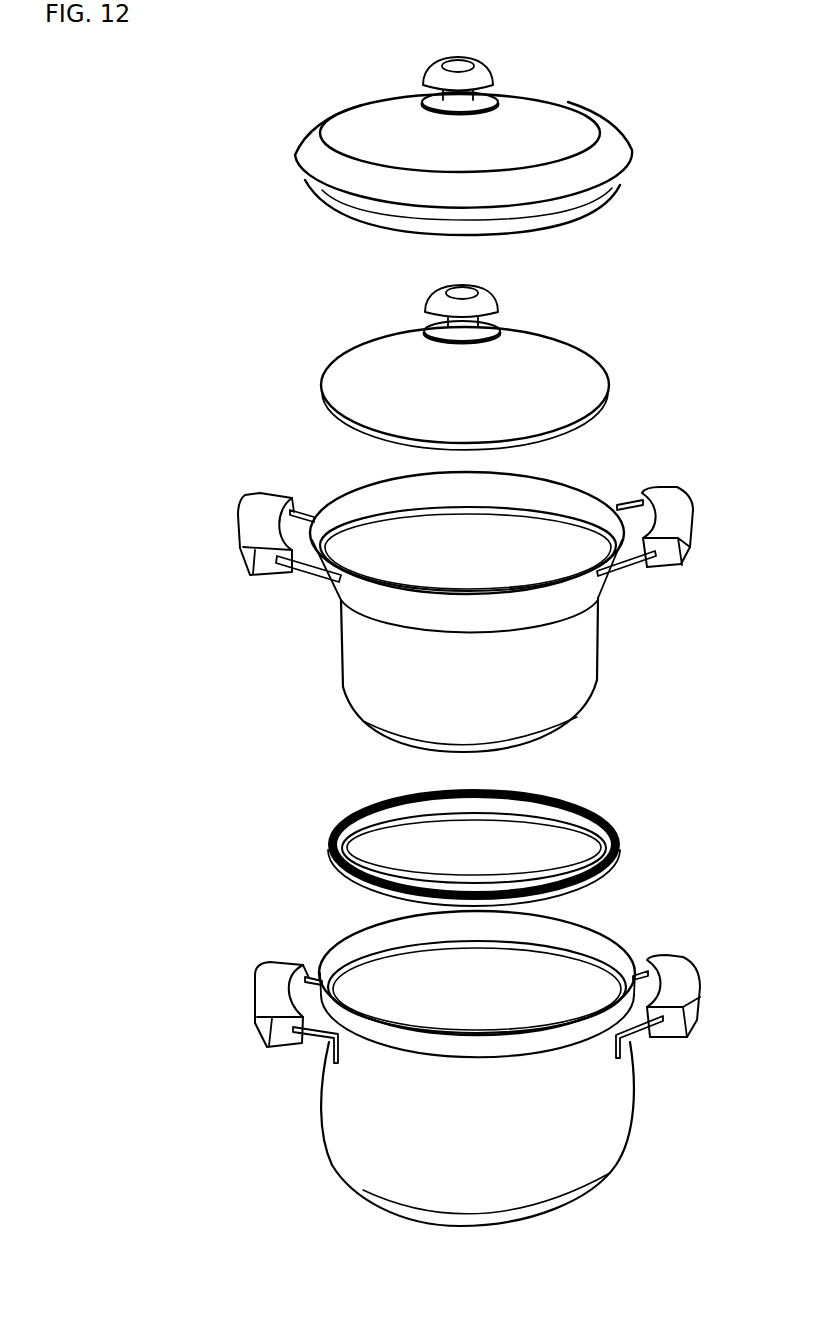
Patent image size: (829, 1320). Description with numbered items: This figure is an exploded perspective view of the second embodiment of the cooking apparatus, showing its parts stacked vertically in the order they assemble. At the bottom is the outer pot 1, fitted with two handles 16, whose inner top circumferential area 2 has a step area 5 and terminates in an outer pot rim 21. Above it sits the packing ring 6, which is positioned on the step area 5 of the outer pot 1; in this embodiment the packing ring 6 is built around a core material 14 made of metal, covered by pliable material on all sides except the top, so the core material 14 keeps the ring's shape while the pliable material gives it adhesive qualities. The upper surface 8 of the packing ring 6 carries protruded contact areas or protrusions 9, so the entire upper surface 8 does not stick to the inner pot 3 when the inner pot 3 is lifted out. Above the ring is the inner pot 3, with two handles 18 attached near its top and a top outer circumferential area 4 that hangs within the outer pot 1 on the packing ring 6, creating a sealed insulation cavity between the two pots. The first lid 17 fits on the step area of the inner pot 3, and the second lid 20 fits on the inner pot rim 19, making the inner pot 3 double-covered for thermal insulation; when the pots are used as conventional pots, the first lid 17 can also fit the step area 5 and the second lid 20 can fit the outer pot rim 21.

The outer pot 1 is at (499, 1058).
The inner top circumferential area 2 is at (619, 953).
The inner pot 3 is at (465, 592).
The top outer circumferential area 4 is at (369, 600).
The step area 5 is at (353, 968).
The packing ring 6 is at (490, 834).
The upper surface 8 is at (343, 827).
The protrusions 9 is at (620, 835).
The core material 14 is at (597, 812).
The handles 16 is at (687, 973).
The first lid 17 is at (577, 352).
The handles 18 is at (660, 487).
The inner pot rim 19 is at (582, 484).
The second lid 20 is at (578, 110).
The outer pot rim 21 is at (606, 924).